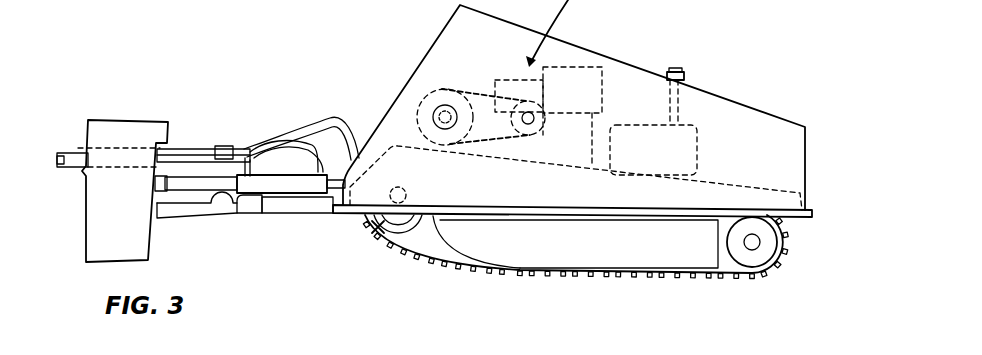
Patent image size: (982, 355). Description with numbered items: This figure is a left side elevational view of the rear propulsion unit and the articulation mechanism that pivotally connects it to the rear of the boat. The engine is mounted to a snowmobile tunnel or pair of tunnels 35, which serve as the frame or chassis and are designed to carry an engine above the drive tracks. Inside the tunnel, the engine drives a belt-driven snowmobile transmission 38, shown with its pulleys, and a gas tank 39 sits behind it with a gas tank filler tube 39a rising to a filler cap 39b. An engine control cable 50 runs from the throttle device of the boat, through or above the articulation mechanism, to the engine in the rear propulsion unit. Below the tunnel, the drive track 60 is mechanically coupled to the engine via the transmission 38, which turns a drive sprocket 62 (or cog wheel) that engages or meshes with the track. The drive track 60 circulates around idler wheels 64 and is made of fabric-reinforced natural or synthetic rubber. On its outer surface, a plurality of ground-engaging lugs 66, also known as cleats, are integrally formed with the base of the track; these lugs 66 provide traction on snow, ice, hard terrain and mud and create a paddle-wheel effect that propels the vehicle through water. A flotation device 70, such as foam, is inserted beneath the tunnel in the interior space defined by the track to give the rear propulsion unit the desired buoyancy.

The snowmobile tunnel 35 is at (768, 190).
The transmission 38 is at (430, 88).
The gas tank 39 is at (683, 148).
The gas tank filler tube 39a is at (684, 100).
The filler cap 39b is at (680, 70).
The engine control cable 50 is at (73, 157).
The drive track 60 is at (396, 252).
The drive sprocket 62 is at (376, 229).
The idler wheel 64 is at (752, 257).
The ground-engaging lugs 66 is at (790, 253).
The flotation device 70 is at (563, 248).